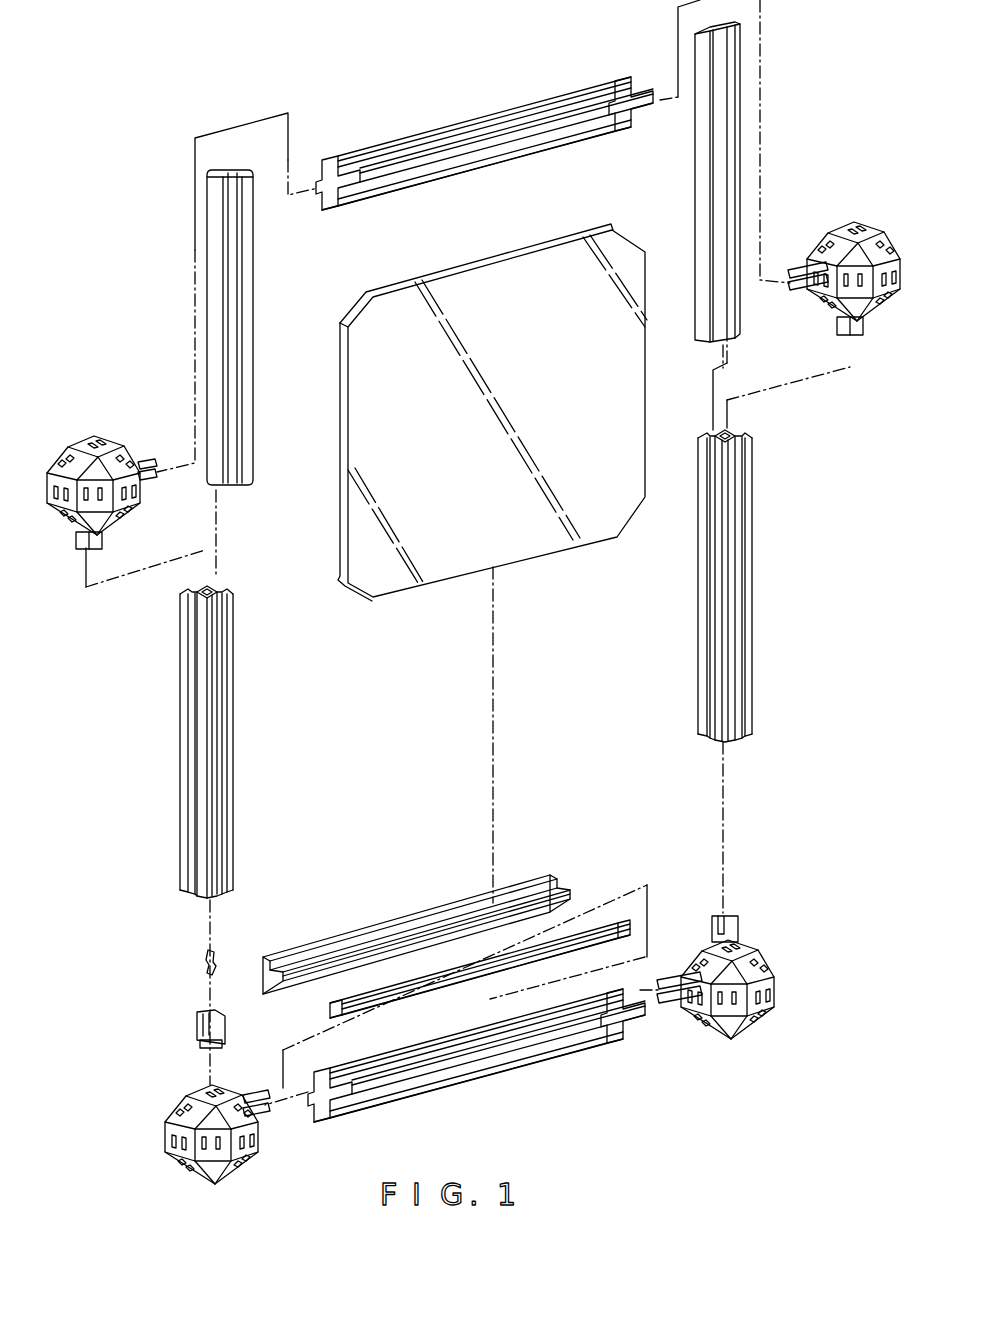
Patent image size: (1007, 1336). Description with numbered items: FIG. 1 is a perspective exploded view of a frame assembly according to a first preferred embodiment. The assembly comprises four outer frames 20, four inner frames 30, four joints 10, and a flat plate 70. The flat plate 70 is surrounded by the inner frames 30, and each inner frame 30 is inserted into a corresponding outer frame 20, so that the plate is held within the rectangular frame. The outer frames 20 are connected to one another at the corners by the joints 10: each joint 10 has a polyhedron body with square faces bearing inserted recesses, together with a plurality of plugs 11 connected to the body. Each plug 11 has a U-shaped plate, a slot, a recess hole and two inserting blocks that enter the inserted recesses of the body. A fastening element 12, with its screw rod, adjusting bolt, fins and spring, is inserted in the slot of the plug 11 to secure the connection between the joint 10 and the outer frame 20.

The joint 10 is at (98, 420).
The plug 11 is at (143, 460).
The fastening element 12 is at (202, 961).
The outer frame 20 is at (366, 152).
The inner frame 30 is at (252, 282).
The flat plate 70 is at (600, 533).